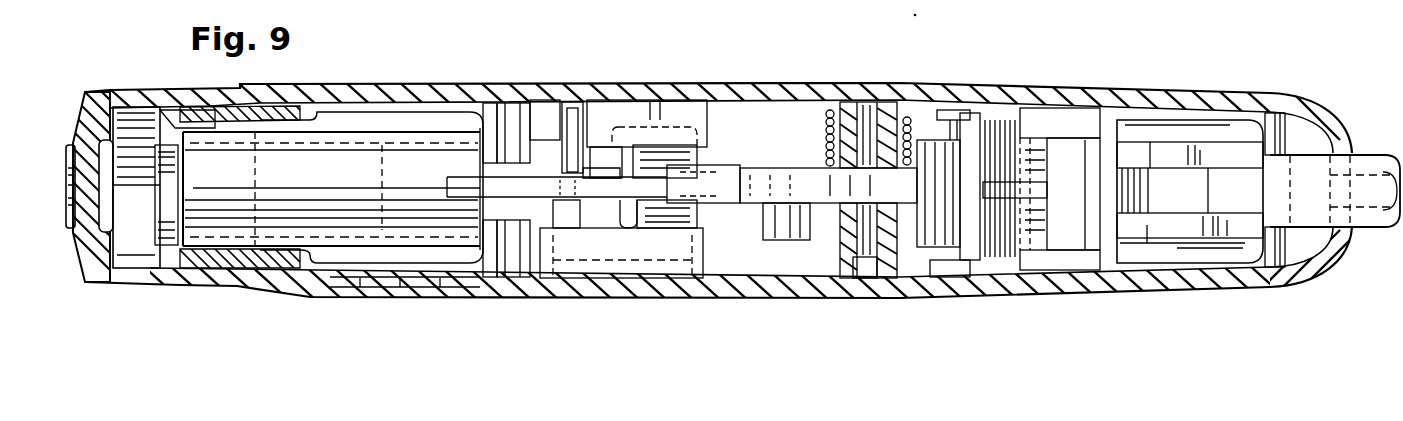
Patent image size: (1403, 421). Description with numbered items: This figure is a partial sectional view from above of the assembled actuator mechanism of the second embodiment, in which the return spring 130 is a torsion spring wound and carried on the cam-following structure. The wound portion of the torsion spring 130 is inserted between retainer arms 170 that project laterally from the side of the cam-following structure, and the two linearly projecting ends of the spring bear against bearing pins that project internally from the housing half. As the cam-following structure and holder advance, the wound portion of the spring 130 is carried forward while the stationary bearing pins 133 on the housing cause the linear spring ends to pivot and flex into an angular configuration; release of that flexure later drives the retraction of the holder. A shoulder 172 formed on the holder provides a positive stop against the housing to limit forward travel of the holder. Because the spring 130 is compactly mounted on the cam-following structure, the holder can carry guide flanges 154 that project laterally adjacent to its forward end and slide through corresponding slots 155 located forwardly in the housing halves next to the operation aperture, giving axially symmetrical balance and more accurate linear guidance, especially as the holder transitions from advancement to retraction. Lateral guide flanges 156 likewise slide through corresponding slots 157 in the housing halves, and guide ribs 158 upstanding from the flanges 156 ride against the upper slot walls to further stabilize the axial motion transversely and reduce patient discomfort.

The return spring 130 is at (607, 180).
The bearing pins 133 is at (572, 178).
The guide flanges 154 is at (310, 296).
The slots 155 is at (210, 288).
The lateral guide flanges 156 is at (630, 232).
The slots 157 is at (540, 237).
The guide ribs 158 is at (685, 140).
The retainer arms 170 is at (566, 172).
The shoulder 172 is at (378, 294).